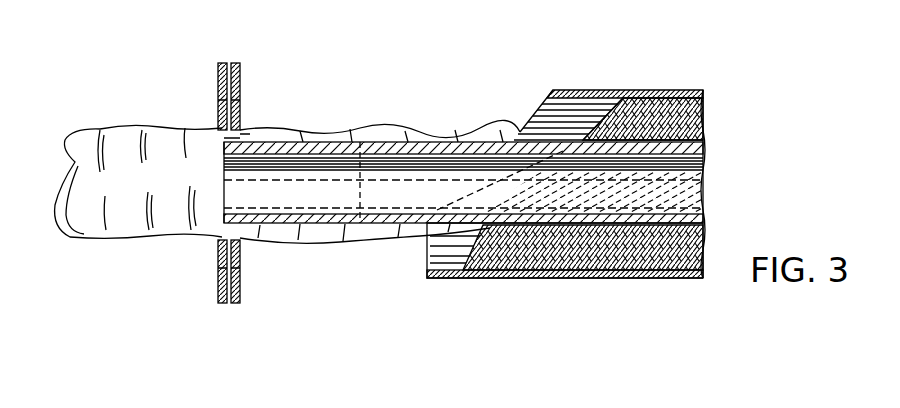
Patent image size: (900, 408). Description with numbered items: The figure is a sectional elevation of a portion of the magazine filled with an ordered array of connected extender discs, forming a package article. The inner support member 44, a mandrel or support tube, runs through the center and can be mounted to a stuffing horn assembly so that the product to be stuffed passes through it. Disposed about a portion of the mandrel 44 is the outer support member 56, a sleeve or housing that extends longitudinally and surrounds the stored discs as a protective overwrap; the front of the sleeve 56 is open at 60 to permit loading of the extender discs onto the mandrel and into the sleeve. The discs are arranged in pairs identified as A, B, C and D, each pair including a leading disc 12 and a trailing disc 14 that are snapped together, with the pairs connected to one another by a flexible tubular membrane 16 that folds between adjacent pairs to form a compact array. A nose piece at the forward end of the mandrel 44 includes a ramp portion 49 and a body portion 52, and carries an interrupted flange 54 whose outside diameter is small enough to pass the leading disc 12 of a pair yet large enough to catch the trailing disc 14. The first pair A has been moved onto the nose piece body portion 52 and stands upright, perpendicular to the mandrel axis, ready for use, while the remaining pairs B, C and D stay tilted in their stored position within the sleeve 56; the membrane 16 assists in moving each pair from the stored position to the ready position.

The leading disc 12 is at (218, 285).
The trailing disc 14 is at (240, 296).
The flexible membrane 16 is at (122, 127).
The inner support member 44 is at (707, 165).
The ramp portion 49 is at (335, 240).
The body portion 52 is at (300, 148).
The interrupted flange 54 is at (244, 135).
The outer support member 56 is at (462, 279).
The open front of the sleeve 60 is at (532, 116).
The first extender disc pair A is at (230, 46).
The extender disc pair B is at (625, 90).
The extender disc pair C is at (662, 91).
The extender disc pair D is at (702, 90).